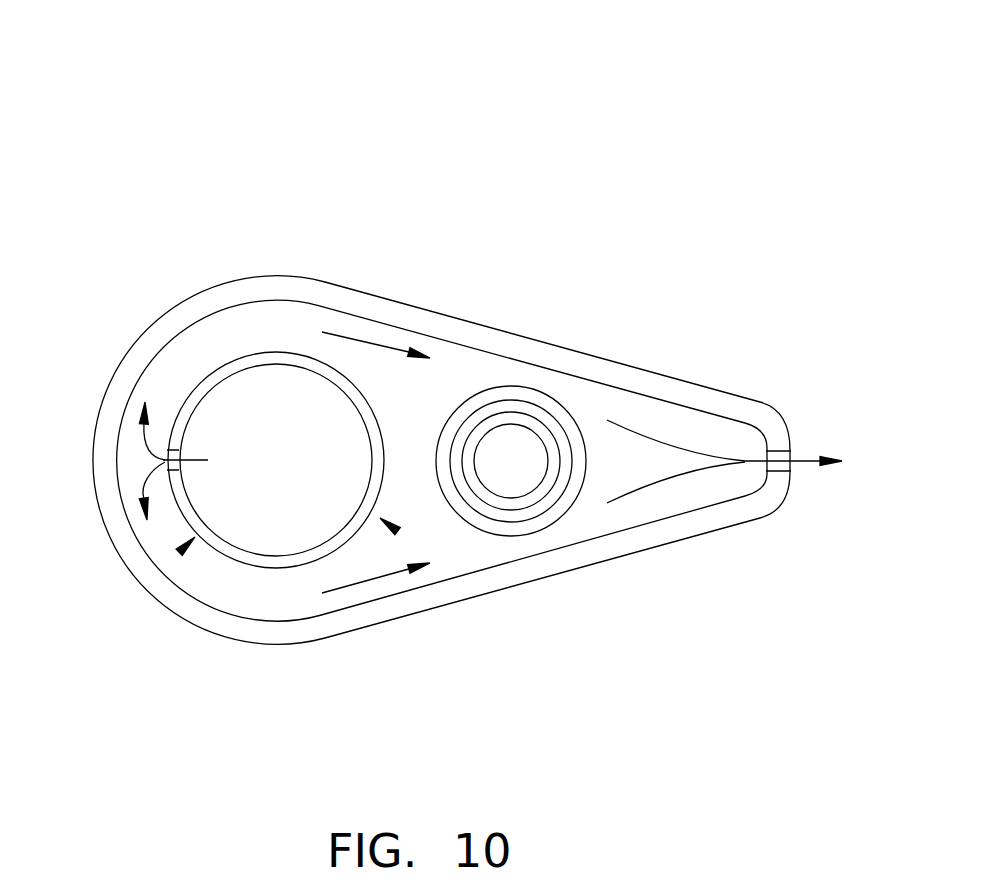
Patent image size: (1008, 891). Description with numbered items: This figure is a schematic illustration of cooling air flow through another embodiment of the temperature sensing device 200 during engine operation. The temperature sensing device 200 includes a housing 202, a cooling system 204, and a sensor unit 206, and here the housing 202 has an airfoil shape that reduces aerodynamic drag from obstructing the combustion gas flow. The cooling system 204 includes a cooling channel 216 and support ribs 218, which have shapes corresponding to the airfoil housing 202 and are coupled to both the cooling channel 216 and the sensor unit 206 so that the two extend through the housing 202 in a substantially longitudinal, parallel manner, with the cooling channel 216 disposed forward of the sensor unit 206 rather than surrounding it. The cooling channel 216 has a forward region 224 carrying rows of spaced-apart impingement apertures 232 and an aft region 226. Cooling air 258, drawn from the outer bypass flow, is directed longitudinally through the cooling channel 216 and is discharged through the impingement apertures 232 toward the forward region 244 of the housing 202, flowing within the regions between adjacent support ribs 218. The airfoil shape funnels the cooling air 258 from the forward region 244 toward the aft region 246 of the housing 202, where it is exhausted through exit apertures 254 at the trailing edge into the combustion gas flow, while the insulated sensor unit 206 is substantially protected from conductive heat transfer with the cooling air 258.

The temperature sensing device 200 is at (278, 137).
The housing 202 is at (490, 328).
The cooling system 204 is at (265, 350).
The sensor unit 206 is at (548, 393).
The cooling channel 216 is at (273, 573).
The support ribs 218 is at (472, 375).
The forward region 224 is at (179, 552).
The aft region 226 is at (398, 531).
The impingement apertures 232 is at (167, 460).
The forward region 244 is at (155, 320).
The aft region 246 is at (772, 403).
The exit apertures 254 is at (785, 468).
The cooling air 258 is at (365, 342).